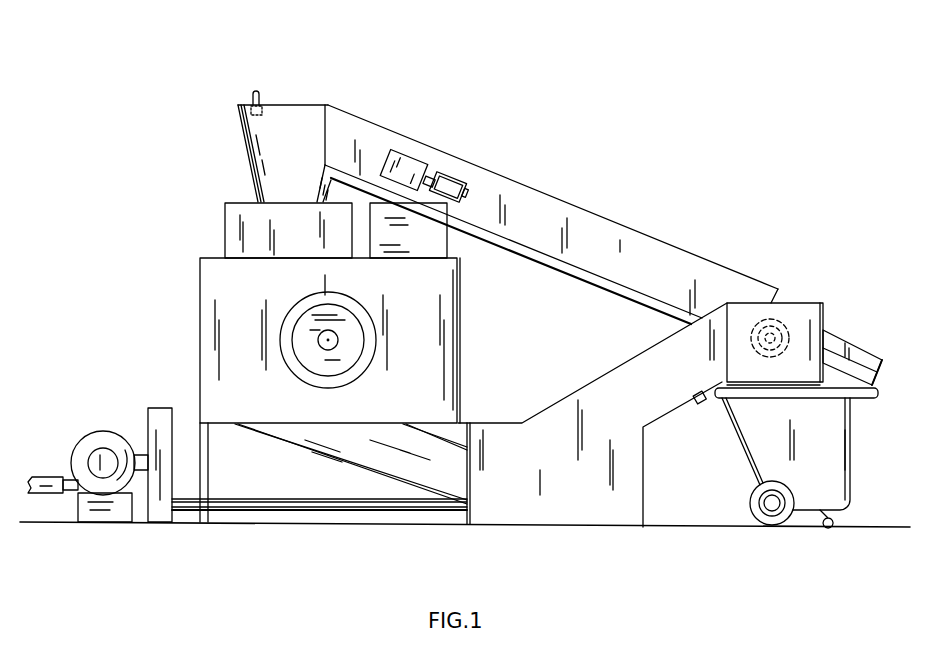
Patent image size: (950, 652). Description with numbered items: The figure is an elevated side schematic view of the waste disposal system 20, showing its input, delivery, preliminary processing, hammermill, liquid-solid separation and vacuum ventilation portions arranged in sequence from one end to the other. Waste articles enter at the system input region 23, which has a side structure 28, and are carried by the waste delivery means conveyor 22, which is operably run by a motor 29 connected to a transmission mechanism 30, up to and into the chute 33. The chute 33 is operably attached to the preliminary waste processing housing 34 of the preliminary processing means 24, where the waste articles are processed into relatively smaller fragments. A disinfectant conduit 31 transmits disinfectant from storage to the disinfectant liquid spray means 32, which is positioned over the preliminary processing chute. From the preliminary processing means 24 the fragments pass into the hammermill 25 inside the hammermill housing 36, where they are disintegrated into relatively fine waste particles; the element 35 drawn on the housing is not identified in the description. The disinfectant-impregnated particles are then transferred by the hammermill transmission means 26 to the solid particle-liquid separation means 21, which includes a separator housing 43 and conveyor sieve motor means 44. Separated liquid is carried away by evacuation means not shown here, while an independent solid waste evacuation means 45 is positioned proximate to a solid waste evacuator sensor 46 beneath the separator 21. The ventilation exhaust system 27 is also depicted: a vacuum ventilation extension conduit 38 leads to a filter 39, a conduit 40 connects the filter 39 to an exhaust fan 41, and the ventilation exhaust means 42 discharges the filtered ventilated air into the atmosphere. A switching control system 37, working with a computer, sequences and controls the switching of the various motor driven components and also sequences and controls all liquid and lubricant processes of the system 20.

The waste disposal system 20 is at (818, 277).
The solid particle-liquid separation means 21 is at (590, 408).
The waste delivery means conveyor 22 is at (593, 232).
The system input region 23 is at (862, 358).
The preliminary processing means 24 is at (226, 146).
The hammermill 25 is at (226, 302).
The hammermill transmission means 26 is at (383, 458).
The ventilation exhaust system 27 is at (134, 420).
The side structure 28 is at (840, 348).
The motor 29 is at (453, 178).
The transmission mechanism 30 is at (408, 160).
The disinfectant conduit 31 is at (256, 90).
The disinfectant liquid spray means 32 is at (263, 112).
The chute 33 is at (303, 127).
The preliminary waste processing housing 34 is at (238, 229).
The cutter wheel 35 is at (353, 340).
The hammermill housing 36 is at (432, 377).
The switching control system 37 is at (430, 238).
The vacuum ventilation extension conduit 38 is at (405, 510).
The filter 39 is at (160, 462).
The conduit 40 is at (142, 472).
The exhaust fan 41 is at (102, 490).
The ventilation exhaust means 42 is at (52, 490).
The separator housing 43 is at (662, 398).
The conveyor sieve motor means 44 is at (763, 320).
The solid waste evacuation means 45 is at (830, 449).
The solid waste evacuator sensor 46 is at (702, 404).